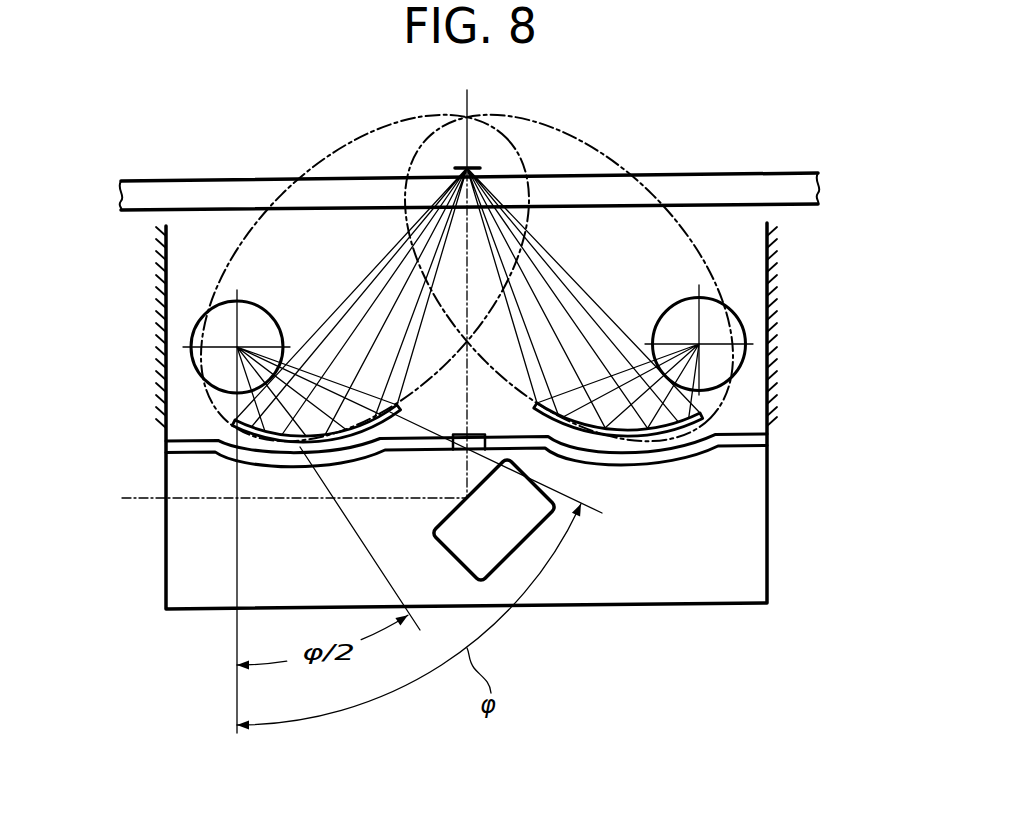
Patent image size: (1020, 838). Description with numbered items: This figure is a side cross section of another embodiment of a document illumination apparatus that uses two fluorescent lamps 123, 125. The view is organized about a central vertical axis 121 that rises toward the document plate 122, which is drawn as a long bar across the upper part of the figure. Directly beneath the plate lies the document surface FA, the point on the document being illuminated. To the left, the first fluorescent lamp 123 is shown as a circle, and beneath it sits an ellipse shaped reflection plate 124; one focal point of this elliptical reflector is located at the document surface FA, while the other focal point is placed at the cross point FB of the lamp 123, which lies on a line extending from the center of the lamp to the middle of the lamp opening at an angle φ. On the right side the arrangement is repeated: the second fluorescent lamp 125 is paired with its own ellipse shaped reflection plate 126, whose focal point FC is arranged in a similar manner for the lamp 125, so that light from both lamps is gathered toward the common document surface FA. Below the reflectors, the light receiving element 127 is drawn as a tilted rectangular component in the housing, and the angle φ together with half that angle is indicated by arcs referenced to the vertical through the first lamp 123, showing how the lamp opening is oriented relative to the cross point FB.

The optical axis / measurement center line 121 is at (467, 102).
The sample plate 122 is at (683, 175).
The fluorescent lamp 123 is at (192, 324).
The ellipse shaped reflection plate 124 is at (262, 441).
The fluorescent lamp 125 is at (745, 310).
The second elliptical mirror 126 is at (671, 440).
The light receiving element 127 is at (456, 510).
The document surface FA is at (478, 158).
The cross point FB is at (244, 383).
The focal point FC is at (692, 378).